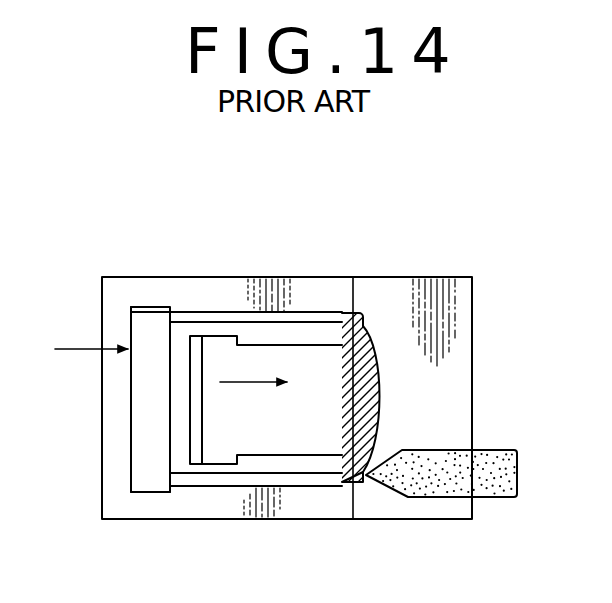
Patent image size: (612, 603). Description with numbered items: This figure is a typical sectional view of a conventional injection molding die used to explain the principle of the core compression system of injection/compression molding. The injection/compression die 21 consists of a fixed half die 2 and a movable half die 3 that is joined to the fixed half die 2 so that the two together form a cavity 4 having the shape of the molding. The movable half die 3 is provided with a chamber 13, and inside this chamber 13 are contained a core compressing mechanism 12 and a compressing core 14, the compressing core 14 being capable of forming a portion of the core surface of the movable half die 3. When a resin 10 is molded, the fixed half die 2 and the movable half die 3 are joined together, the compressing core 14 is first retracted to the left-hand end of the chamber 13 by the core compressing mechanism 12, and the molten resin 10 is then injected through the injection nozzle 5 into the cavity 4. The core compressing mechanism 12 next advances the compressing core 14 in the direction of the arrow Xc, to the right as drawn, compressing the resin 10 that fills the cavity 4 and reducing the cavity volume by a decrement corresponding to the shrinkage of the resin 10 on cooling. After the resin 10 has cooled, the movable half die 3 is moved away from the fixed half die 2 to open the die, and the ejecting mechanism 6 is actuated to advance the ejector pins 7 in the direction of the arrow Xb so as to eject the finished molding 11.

The fixed half die 2 is at (457, 303).
The movable half die 3 is at (148, 293).
The cavity 4 is at (349, 475).
The injection nozzle 5 is at (497, 498).
The ejecting mechanism 6 is at (142, 388).
The ejector pins 7 is at (310, 312).
The resin 10 is at (482, 458).
The molding 11 is at (376, 394).
The core compressing mechanism 12 is at (200, 413).
The chamber 13 is at (197, 465).
The compressing core 14 is at (250, 440).
The injection/compression die 21 is at (412, 266).
The direction of ejector pin advance Xb is at (73, 345).
The direction of core advance Xc is at (235, 380).